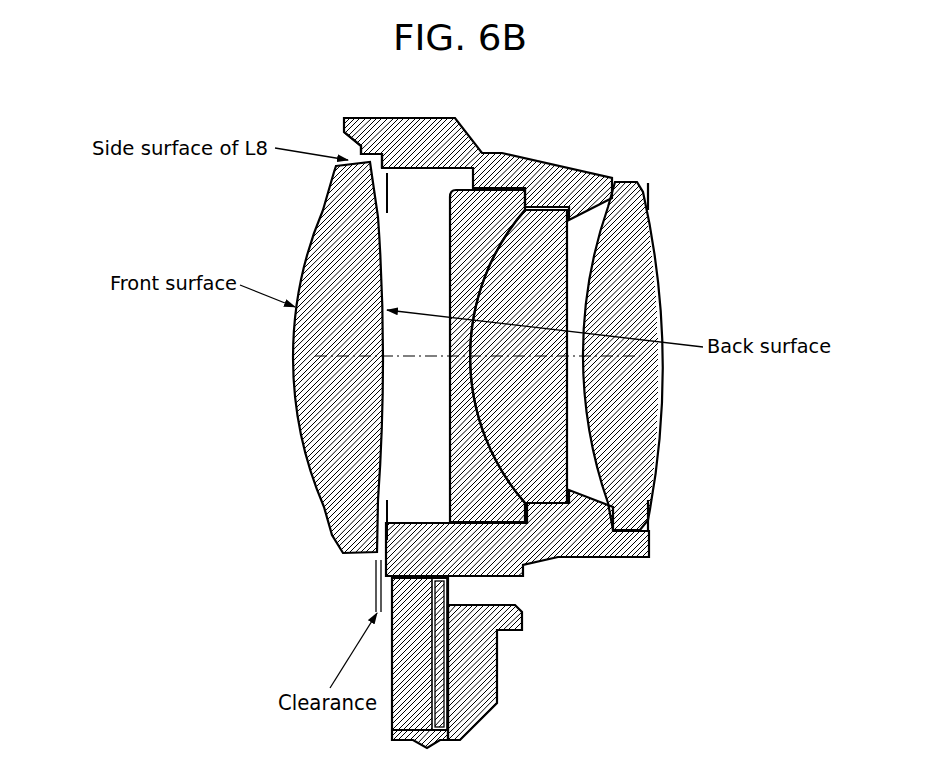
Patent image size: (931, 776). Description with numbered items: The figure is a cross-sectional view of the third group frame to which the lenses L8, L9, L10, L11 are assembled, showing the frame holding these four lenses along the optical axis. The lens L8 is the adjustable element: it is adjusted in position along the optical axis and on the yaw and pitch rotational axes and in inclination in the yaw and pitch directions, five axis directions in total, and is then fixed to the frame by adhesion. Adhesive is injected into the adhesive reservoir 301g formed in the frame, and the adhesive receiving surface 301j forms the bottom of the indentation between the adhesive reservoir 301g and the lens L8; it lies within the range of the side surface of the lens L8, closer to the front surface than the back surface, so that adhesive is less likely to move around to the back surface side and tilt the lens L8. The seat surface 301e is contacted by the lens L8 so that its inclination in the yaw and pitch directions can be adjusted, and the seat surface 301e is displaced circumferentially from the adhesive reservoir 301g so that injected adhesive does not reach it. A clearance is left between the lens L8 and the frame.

The adhesive reservoir 301g is at (415, 118).
The adhesive receiving surface 301j is at (362, 147).
The seat surface 301e is at (435, 593).
The lens L8 is at (343, 430).
The lens L9 is at (488, 218).
The lens L10 is at (533, 267).
The lens L11 is at (645, 275).